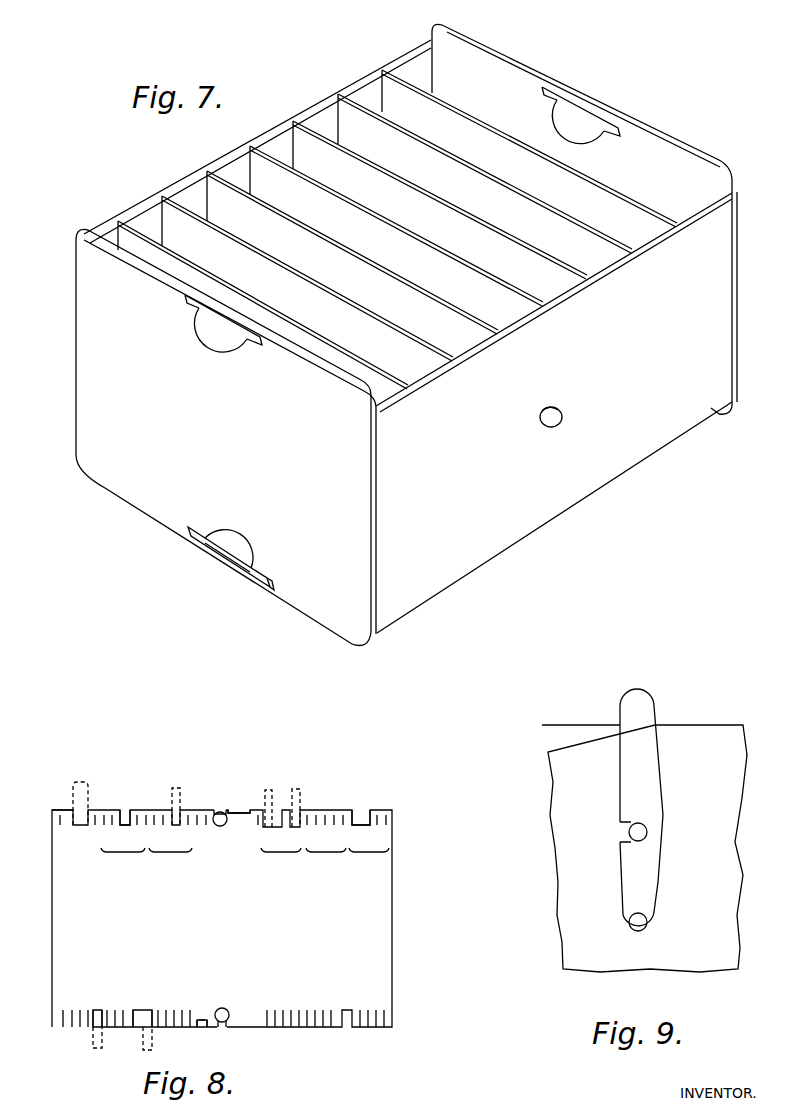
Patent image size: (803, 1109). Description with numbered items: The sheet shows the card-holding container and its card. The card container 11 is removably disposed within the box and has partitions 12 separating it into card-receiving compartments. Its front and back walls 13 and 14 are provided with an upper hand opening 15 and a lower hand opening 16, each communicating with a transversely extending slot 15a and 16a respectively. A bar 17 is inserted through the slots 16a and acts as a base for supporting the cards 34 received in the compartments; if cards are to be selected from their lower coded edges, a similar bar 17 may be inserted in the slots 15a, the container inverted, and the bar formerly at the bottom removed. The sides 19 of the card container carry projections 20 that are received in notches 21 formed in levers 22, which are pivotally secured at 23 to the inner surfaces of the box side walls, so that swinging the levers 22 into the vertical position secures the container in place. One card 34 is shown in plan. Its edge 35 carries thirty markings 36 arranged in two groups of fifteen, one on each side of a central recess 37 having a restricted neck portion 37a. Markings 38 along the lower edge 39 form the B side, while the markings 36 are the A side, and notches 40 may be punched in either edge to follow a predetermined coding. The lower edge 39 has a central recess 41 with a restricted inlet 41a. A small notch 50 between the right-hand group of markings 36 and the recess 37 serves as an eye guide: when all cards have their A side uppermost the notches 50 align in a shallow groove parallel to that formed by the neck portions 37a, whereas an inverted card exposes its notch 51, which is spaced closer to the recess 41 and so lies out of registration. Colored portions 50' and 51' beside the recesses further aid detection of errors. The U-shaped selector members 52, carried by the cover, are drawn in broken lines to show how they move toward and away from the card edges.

In FIG. 7, the card container 11 is at (660, 470).
In FIG. 7, the partitions 12 is at (390, 80).
In FIG. 7, the front wall 13 is at (142, 496).
In FIG. 7, the back wall 14 is at (697, 148).
In FIG. 7, the upper hand opening 15 is at (229, 348).
In FIG. 7, the transversely extending slot 15a is at (262, 345).
In FIG. 7, the lower hand opening 16 is at (243, 536).
In FIG. 7, the transversely extending slot 16a is at (269, 581).
In FIG. 7, the bar 17 is at (253, 580).
In FIG. 7, the sides of the card container 19 is at (325, 107).
In FIG. 9, the sides of the card container 19 is at (713, 735).
In FIG. 7, the projections 20 is at (561, 408).
In FIG. 9, the projections 20 is at (647, 831).
In FIG. 9, the notches 21 is at (619, 823).
In FIG. 9, the levers 22 is at (654, 698).
In FIG. 9, the pivot 23 is at (647, 920).
In FIG. 8, the card 34 is at (393, 915).
In FIG. 8, the edge of the card 35 is at (56, 809).
In FIG. 8, the markings 36 is at (147, 810).
In FIG. 8, the central recess 37 is at (227, 827).
In FIG. 8, the restricted neck portion 37a is at (222, 812).
In FIG. 8, the markings 38 is at (128, 1027).
In FIG. 8, the lower edge of the card 39 is at (73, 1028).
In FIG. 8, the notches 40 is at (358, 812).
In FIG. 8, the central recess 41 is at (223, 1008).
In FIG. 8, the restricted inlet 41a is at (223, 1028).
In FIG. 8, the small notch 50 is at (243, 795).
In FIG. 8, the colored portion 50' is at (239, 786).
In FIG. 8, the small notch 51 is at (199, 1036).
In FIG. 8, the colored portion 51' is at (195, 998).
In FIG. 8, the U-shaped member 52 is at (88, 783).